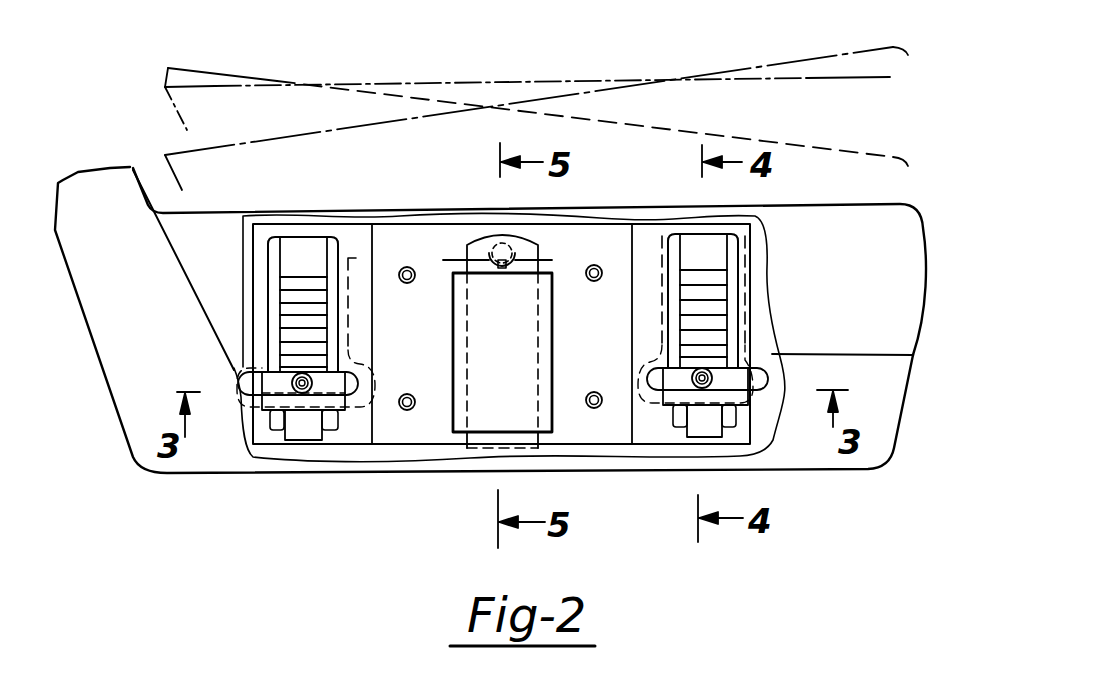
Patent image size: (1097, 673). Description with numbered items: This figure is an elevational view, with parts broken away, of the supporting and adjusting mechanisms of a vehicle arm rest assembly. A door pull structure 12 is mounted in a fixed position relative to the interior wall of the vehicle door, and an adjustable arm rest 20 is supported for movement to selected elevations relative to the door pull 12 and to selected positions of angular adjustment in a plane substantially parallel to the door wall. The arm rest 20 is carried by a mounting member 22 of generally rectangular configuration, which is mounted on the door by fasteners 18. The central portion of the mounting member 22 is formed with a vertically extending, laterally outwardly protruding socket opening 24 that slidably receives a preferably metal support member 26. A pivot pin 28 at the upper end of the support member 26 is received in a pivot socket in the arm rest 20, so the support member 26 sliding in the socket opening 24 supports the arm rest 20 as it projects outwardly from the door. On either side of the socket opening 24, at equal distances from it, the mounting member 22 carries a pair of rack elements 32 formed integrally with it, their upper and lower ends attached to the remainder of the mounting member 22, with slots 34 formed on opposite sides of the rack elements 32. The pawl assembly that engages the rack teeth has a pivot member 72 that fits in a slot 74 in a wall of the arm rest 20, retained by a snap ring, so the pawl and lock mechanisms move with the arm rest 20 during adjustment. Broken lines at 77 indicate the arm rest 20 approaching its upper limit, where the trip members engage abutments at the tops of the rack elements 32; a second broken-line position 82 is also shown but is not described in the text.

The door pull structure 12 is at (896, 426).
The fasteners 18 is at (415, 272).
The adjustable arm rest 20 is at (882, 212).
The mounting member 22 is at (265, 436).
The socket opening 24 is at (547, 335).
The support member 26 is at (505, 245).
The pivot pin 28 is at (517, 252).
The rack elements 32 is at (307, 260).
The slots 34 is at (333, 320).
The pivot member 72 is at (306, 395).
The slot 74 is at (356, 380).
The upper limit position of arm rest 77 is at (447, 46).
The cover intermediate position 82 is at (212, 73).